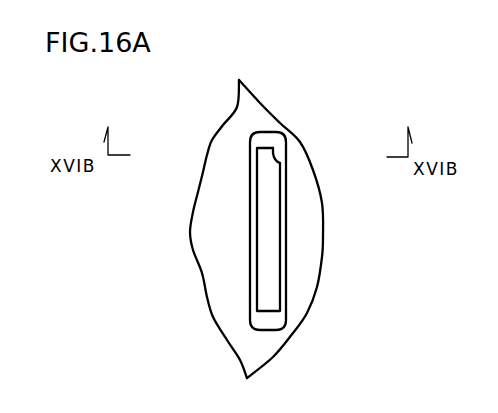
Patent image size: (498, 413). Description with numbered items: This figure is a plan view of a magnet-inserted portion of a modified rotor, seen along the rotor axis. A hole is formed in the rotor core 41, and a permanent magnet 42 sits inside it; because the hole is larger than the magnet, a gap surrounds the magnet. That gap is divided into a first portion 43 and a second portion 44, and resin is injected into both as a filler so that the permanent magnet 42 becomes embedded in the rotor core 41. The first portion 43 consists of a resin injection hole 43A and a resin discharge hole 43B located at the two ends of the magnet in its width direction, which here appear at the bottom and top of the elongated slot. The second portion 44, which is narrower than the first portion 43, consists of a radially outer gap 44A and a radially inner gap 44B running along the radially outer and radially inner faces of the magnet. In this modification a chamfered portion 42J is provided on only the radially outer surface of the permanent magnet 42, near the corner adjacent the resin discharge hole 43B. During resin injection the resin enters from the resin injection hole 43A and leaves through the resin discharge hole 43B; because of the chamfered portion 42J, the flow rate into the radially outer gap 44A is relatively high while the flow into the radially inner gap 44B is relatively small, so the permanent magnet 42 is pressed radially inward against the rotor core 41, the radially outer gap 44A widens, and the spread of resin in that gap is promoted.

The rotor core 41 is at (250, 110).
The permanent magnet 42 is at (267, 291).
The chamfered portion 42J is at (277, 151).
The first portion 43 is at (248, 231).
The resin injection hole 43A is at (273, 320).
The resin discharge hole 43B is at (275, 142).
The second portion 44 is at (191, 231).
The radially outer gap 44A is at (280, 243).
The radially inner gap 44B is at (253, 190).